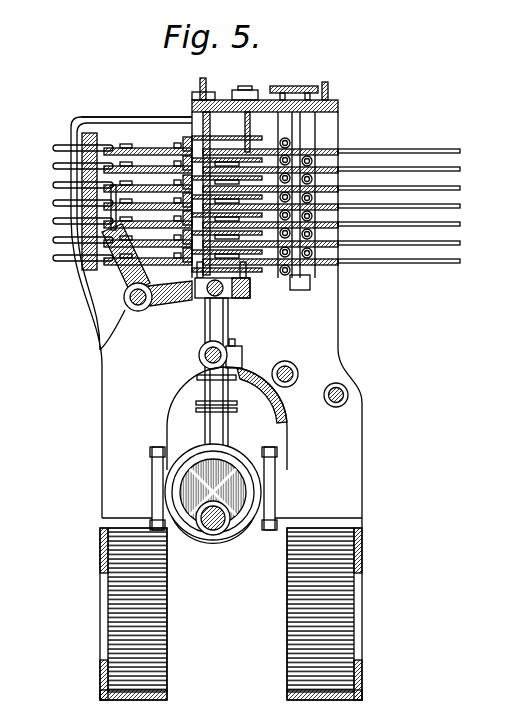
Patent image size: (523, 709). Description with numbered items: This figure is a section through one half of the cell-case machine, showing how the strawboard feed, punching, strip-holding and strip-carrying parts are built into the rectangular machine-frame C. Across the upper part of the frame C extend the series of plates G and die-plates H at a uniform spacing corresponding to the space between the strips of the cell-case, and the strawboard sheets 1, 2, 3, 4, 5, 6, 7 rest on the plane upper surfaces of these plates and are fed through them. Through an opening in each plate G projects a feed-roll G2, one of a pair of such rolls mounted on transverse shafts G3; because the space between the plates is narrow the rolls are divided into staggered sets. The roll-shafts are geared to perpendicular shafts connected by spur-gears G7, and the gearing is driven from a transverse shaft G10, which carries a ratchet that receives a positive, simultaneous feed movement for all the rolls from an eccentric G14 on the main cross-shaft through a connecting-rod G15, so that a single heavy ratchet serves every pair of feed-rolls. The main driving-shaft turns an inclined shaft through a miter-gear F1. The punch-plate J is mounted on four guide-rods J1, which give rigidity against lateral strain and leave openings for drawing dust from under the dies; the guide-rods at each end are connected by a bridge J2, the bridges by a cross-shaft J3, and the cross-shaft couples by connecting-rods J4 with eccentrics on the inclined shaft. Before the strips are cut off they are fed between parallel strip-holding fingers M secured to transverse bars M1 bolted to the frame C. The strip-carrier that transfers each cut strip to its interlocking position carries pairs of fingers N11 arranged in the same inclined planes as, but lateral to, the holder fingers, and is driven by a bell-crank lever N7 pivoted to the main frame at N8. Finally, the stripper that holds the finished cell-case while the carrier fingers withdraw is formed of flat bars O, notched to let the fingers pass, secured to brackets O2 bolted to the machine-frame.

The rectangular frame C is at (338, 121).
The spur-gears G7 is at (294, 86).
The flat bars of stripper O is at (80, 130).
The brackets O2 is at (156, 117).
The carrier fingers N11 is at (53, 148).
The strip-holding fingers M is at (143, 138).
The transverse bars M1 is at (186, 137).
The die-plates H is at (256, 160).
The punch-plate J is at (227, 195).
The guide-rods J1 is at (253, 132).
The feed-roll G2 is at (286, 138).
The plates G is at (318, 150).
The transverse shafts G3 is at (296, 290).
The strawboard sheet 1 is at (407, 148).
The strawboard sheet 2 is at (407, 166).
The strawboard sheet 3 is at (407, 185).
The strawboard sheet 4 is at (407, 203).
The strawboard sheet 5 is at (407, 221).
The strawboard sheet 6 is at (407, 240).
The strawboard sheet 7 is at (408, 258).
The bell-crank lever N7 is at (114, 278).
The pivot of bell-crank lever N8 is at (140, 305).
The cross-shaft J3 is at (204, 298).
The bridge J2 is at (250, 296).
The connecting-rods J4 is at (226, 316).
The connecting-rod G15 is at (199, 360).
The transverse shaft G10 is at (290, 366).
The eccentric G14 is at (180, 482).
The miter-gear F1 is at (213, 530).